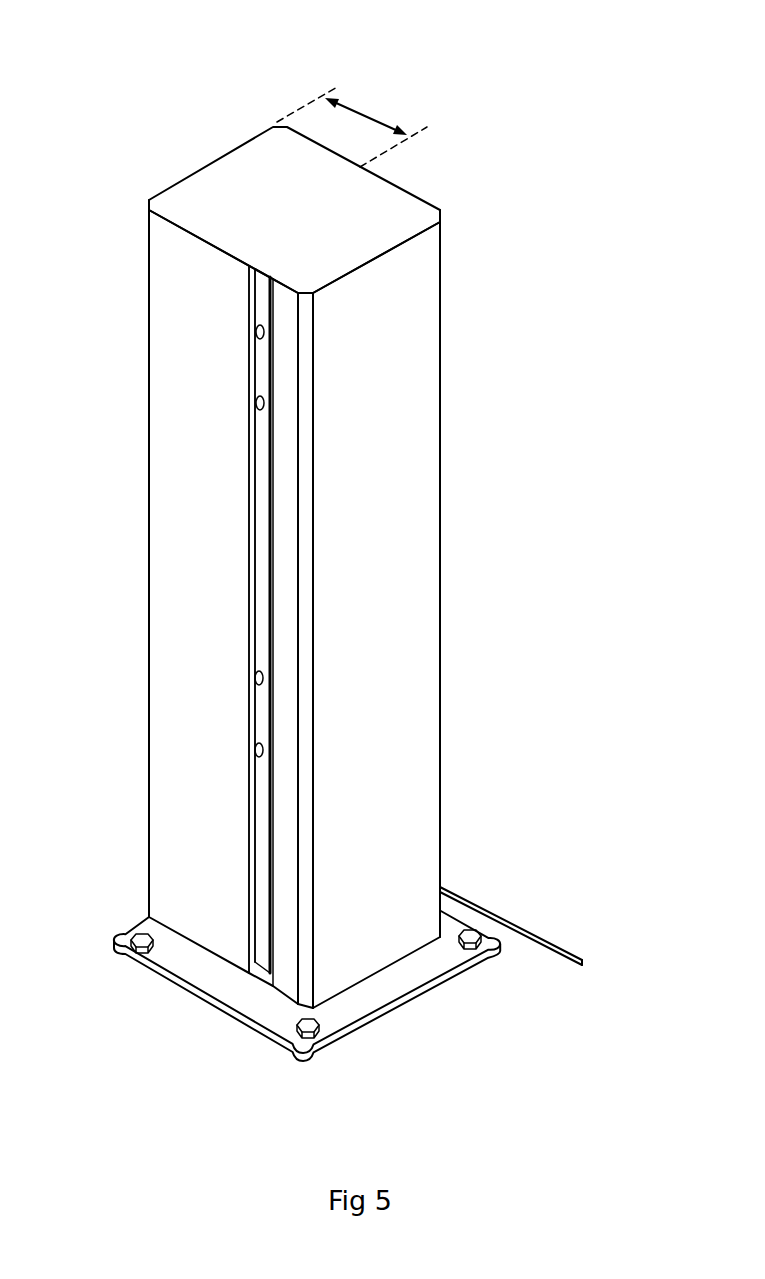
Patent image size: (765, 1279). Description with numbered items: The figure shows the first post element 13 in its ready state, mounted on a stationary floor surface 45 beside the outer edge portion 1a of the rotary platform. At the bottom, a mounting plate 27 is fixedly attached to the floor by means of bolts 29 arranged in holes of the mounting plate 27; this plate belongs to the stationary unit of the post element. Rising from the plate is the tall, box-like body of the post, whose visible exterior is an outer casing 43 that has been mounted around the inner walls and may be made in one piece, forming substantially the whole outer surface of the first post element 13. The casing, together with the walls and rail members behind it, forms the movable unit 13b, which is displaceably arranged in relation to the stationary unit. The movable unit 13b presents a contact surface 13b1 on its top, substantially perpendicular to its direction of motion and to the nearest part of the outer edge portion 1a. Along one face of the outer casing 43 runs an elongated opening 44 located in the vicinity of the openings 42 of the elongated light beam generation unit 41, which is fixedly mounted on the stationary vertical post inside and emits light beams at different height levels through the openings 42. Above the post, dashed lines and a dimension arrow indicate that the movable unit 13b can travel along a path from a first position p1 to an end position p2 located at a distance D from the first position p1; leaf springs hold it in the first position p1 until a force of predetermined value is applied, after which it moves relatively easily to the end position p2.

The first post element 13 is at (344, 534).
The movable unit 13b is at (388, 672).
The contact surface 13b1 is at (215, 160).
The outer casing 43 is at (392, 329).
The light beam generation unit 41 is at (258, 527).
The openings 42 is at (253, 398).
The elongated opening 44 is at (263, 850).
The mounting plate 27 is at (213, 990).
The bolts 29 is at (470, 930).
The stationary floor surface 45 is at (467, 1018).
The outer edge portion 1a is at (520, 923).
The distance D is at (358, 108).
The first position p1 is at (323, 98).
The end position p2 is at (408, 132).